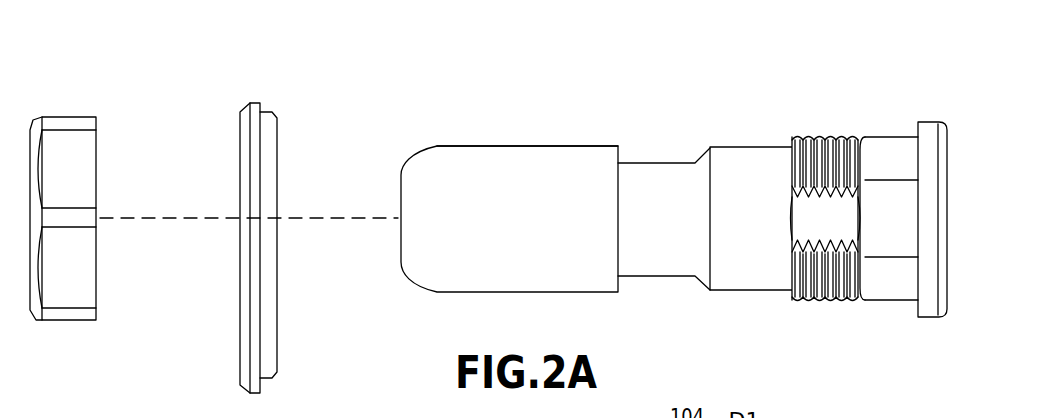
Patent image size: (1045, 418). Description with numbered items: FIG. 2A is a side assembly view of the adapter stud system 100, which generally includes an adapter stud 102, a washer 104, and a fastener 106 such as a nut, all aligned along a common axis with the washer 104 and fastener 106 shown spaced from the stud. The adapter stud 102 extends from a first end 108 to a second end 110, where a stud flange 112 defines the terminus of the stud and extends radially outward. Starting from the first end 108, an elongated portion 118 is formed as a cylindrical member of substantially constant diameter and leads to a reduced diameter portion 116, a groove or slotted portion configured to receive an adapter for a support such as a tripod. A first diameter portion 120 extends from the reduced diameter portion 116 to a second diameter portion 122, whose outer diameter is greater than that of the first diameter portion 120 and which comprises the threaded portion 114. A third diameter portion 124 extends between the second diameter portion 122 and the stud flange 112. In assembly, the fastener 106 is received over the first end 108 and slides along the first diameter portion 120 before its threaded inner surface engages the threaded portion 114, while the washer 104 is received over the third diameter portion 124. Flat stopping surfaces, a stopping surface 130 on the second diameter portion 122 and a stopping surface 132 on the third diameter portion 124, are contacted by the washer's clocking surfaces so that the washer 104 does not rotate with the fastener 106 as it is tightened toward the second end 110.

The adapter stud system 100 is at (744, 70).
The adapter stud 102 is at (587, 146).
The washer 104 is at (252, 103).
The fastener 106 is at (62, 120).
The first end 108 is at (432, 128).
The second end 110 is at (925, 107).
The stud flange 112 is at (929, 318).
The threaded portion 114 is at (828, 133).
The reduced diameter portion 116 is at (668, 157).
The elongated portion 118 is at (532, 145).
The first diameter portion 120 is at (712, 318).
The second diameter portion 122 is at (827, 205).
The third diameter portion 124 is at (889, 251).
The stopping surface 130 is at (811, 231).
The stopping surface 132 is at (875, 234).